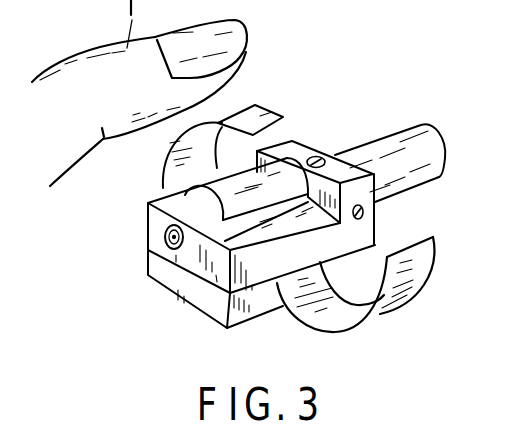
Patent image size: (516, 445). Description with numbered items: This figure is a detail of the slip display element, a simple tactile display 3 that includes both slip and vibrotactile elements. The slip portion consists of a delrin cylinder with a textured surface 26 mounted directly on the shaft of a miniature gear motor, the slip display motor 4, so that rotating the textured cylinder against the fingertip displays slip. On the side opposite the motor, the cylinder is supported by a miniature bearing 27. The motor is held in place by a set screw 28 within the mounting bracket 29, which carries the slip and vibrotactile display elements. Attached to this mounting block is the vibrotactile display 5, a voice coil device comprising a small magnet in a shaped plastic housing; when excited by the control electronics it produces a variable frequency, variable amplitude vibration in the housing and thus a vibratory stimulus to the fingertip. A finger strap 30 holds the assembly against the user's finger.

The tactile display 3 is at (309, 142).
The slip display motor 4 is at (401, 130).
The vibrotactile display 5 is at (158, 282).
The textured delrin surface 26 is at (169, 196).
The miniature bearing 27 is at (165, 237).
The set screw 28 is at (318, 158).
The mounting bracket for the slip and vibrotactile display elements 29 is at (376, 219).
The finger strap 30 is at (393, 289).